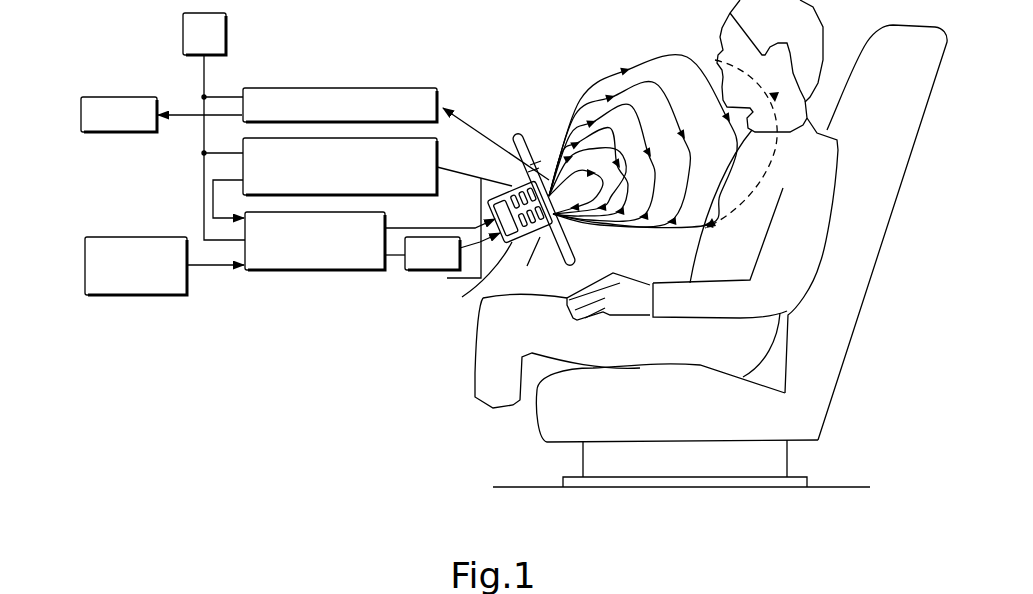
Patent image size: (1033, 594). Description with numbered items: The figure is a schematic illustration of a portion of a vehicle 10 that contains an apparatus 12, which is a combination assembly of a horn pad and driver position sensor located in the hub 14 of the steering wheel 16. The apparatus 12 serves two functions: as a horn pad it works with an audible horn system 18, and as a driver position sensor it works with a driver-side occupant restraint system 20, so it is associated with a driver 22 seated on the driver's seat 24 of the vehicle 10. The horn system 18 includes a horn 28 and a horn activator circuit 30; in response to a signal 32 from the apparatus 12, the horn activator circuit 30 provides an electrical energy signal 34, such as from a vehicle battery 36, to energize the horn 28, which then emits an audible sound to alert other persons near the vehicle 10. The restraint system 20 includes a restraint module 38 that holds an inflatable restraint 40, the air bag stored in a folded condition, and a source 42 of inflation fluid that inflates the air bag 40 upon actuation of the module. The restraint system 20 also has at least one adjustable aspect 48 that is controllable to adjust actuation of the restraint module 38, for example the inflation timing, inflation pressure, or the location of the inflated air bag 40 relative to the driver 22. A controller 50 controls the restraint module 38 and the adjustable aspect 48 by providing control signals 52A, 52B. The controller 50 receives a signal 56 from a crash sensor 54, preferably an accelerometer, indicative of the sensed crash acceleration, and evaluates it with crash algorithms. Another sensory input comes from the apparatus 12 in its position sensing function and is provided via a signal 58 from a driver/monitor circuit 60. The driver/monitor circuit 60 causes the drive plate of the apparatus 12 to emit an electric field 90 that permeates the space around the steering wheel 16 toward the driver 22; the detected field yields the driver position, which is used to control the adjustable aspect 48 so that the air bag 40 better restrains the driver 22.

The vehicle 10 is at (829, 471).
The apparatus 12 is at (534, 147).
The hub 14 is at (538, 242).
The steering wheel 16 is at (503, 132).
The audible horn system 18 is at (99, 85).
The driver-side occupant restraint system 20 is at (226, 290).
The driver 22 is at (808, 16).
The driver's seat 24 is at (845, 330).
The horn 28 is at (118, 97).
The horn activator circuit 30 is at (313, 88).
The signal 32 is at (474, 125).
The electrical energy signal 34 is at (190, 110).
The vehicle battery 36 is at (224, 19).
The restraint module 38 is at (501, 169).
The inflatable restraint 40 is at (507, 294).
The source of inflation fluid 42 is at (481, 283).
The adjustable aspect 48 is at (414, 270).
The controller 50 is at (313, 270).
The control signal 52A is at (412, 226).
The control signal 52B is at (396, 257).
The crash sensor 54 is at (96, 237).
The signal 56 is at (198, 267).
The signal 58 is at (213, 200).
The driver/monitor circuit 60 is at (243, 143).
The electric field 90 is at (663, 55).